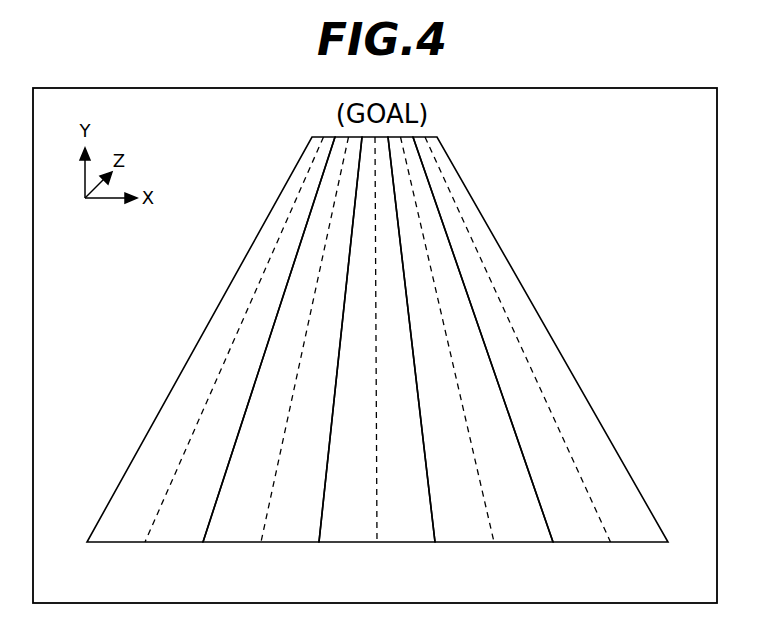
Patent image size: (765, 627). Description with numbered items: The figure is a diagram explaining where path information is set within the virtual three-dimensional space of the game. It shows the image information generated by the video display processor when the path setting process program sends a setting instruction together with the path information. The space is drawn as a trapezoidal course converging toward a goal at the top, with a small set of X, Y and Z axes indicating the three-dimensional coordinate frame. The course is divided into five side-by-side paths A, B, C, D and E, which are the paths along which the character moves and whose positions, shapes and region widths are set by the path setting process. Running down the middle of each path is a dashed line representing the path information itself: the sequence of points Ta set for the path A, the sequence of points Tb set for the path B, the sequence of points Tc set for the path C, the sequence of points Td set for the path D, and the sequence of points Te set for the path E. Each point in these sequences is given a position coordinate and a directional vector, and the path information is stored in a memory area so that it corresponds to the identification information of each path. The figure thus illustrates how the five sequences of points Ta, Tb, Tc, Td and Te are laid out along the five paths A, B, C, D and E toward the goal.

The path A is at (211, 339).
The path B is at (282, 339).
The path C is at (377, 339).
The path D is at (470, 339).
The path E is at (540, 339).
The sequence of points Ta is at (230, 351).
The sequence of points Tb is at (307, 346).
The sequence of points Tc is at (376, 348).
The sequence of points Td is at (449, 344).
The sequence of points Te is at (524, 344).